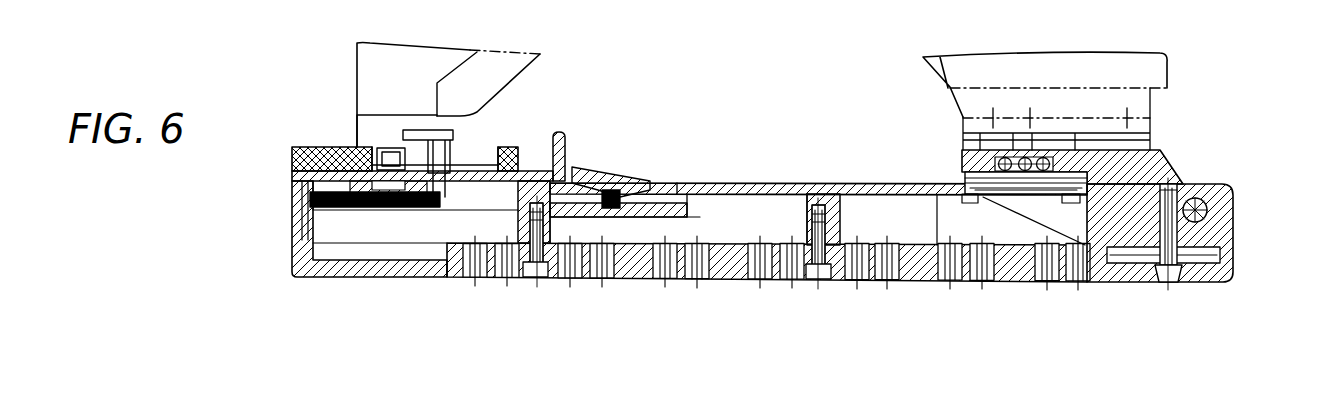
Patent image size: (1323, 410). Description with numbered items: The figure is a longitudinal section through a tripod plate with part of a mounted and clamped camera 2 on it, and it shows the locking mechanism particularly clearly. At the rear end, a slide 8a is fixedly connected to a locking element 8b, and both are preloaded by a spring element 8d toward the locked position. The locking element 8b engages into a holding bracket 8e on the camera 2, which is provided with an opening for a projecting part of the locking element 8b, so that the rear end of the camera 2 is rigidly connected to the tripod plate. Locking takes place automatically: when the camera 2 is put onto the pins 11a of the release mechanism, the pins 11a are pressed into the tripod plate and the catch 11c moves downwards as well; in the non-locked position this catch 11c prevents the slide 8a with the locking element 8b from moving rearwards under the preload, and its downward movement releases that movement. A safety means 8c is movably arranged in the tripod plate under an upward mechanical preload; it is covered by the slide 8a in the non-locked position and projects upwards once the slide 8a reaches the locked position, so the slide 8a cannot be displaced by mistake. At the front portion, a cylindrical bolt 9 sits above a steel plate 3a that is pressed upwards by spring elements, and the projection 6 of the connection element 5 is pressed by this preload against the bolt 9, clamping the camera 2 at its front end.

The camera 2 is at (373, 88).
The steel plate 3a is at (1217, 258).
The connection element 5 is at (1177, 168).
The projection 6 is at (1203, 233).
The slide 8a is at (560, 132).
The locking element 8b is at (447, 135).
The safety means 8c is at (598, 177).
The spring element 8d is at (293, 200).
The holding bracket 8e is at (367, 125).
The cylindrical bolt 9 is at (1207, 208).
The pins 11a is at (385, 175).
The catch 11c is at (300, 171).